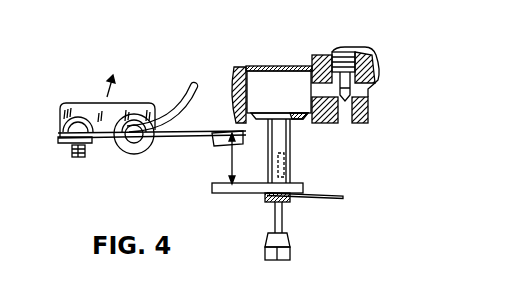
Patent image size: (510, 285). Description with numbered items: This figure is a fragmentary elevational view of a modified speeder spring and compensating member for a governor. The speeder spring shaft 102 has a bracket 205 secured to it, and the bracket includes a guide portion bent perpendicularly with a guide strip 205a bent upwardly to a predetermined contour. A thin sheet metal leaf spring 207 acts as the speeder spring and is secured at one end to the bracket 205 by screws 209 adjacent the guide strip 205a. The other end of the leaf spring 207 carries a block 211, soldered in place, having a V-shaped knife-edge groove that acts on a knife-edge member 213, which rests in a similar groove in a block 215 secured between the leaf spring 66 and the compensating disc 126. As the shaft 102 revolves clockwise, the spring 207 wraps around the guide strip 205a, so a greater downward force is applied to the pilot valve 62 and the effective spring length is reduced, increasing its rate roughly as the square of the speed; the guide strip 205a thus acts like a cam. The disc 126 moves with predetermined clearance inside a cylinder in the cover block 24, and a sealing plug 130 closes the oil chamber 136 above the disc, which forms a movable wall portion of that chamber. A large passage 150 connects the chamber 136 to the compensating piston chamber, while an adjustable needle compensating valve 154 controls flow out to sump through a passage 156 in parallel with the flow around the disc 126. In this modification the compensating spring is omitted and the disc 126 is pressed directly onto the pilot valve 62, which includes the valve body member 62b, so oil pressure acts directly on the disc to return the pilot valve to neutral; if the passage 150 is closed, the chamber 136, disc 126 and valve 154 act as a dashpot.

The bracket 205 is at (83, 112).
The speeder spring shaft 102 is at (137, 122).
The leaf spring 207 is at (159, 156).
The screws 209 is at (80, 158).
The guide strip 205a is at (187, 98).
The cover block 24 is at (236, 93).
The sealing plug 130 is at (280, 68).
The oil chamber 136 is at (292, 99).
The compensating disc 126 is at (292, 121).
The needle compensating valve 154 is at (346, 93).
The passage 150 is at (372, 92).
The passage 156 is at (348, 112).
The block 211 is at (213, 141).
The knife-edge member 213 is at (234, 157).
The block 215 is at (245, 193).
The leaf spring 66 is at (343, 198).
The pilot valve 62 is at (283, 214).
The valve body member 62b is at (291, 237).